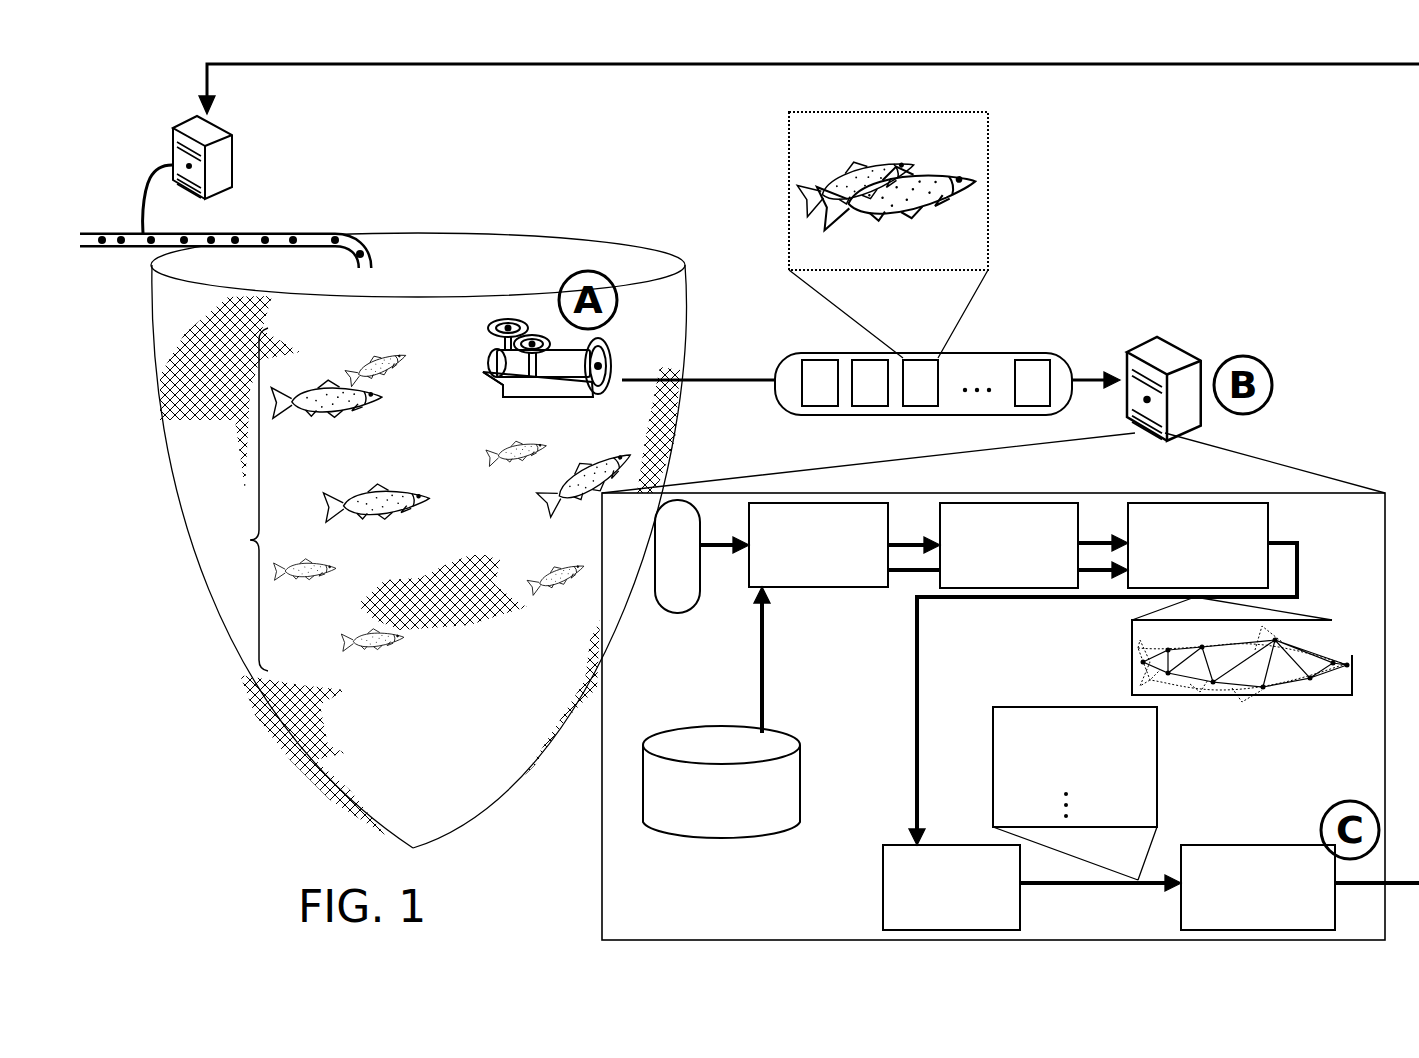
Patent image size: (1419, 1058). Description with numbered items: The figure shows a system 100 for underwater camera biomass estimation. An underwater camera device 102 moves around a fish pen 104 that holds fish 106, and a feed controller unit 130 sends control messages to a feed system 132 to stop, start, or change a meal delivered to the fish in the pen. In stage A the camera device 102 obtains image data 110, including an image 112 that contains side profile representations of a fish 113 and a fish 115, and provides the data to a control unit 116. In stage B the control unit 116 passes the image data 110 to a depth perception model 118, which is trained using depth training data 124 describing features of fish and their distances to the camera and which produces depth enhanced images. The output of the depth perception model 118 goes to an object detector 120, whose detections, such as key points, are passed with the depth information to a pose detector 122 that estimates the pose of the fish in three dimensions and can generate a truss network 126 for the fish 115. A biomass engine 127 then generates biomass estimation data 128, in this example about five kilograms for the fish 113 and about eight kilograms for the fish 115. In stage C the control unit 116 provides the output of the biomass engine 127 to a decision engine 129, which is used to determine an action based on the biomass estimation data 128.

The system 100 is at (184, 852).
The underwater camera device 102 is at (579, 358).
The fish pen 104 is at (390, 540).
The fish 106 is at (240, 499).
The image data 110 is at (871, 485).
The image 112 is at (905, 218).
The fish 113 is at (648, 253).
The fish 115 is at (823, 400).
The control unit 116 is at (1194, 372).
The depth perception model 118 is at (818, 568).
The object detector 120 is at (1009, 569).
The pose detector 122 is at (1164, 569).
The depth training data 124 is at (753, 771).
The truss network 126 is at (1212, 649).
The biomass engine 127 is at (917, 887).
The biomass estimation data 128 is at (1117, 793).
The decision engine 129 is at (1228, 890).
The feed controller unit 130 is at (227, 174).
The feed system 132 is at (222, 231).